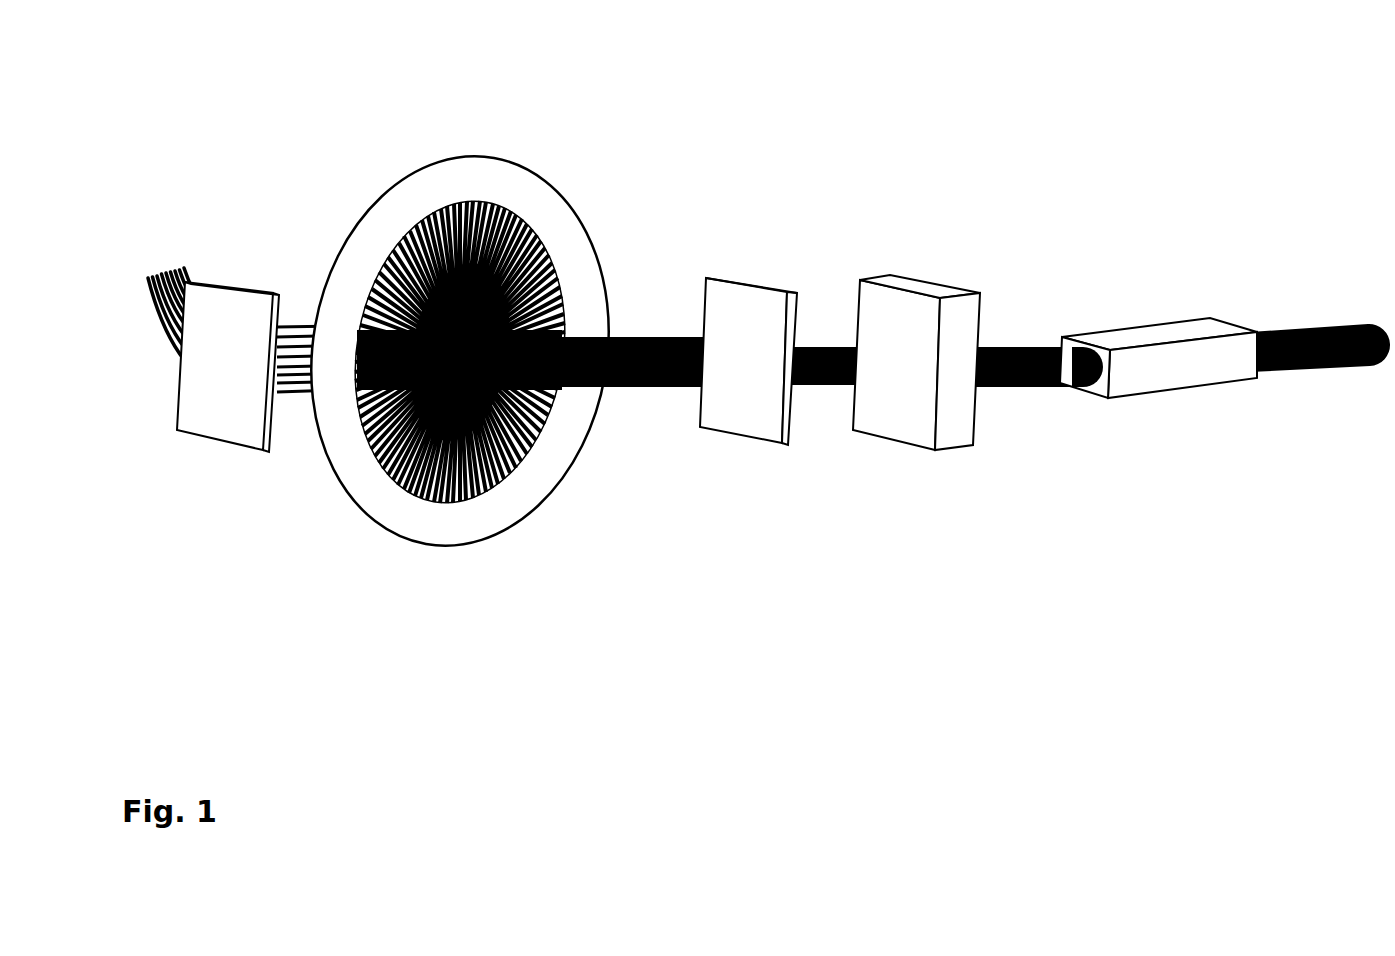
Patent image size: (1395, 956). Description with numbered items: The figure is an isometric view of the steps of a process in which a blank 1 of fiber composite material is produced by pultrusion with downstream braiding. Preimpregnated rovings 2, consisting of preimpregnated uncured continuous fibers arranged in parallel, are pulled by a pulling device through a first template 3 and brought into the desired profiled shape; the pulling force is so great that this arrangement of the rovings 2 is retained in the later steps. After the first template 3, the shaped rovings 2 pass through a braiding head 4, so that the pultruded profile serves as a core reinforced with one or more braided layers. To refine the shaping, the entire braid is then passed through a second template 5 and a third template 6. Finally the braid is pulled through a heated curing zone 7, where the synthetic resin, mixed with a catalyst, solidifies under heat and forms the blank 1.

The blank 1 is at (1313, 327).
The preimpregnated rovings 2 is at (180, 298).
The first template 3 is at (236, 305).
The braiding head 4 is at (390, 188).
The second template 5 is at (743, 303).
The third template 6 is at (908, 305).
The heated curing zone 7 is at (1152, 358).